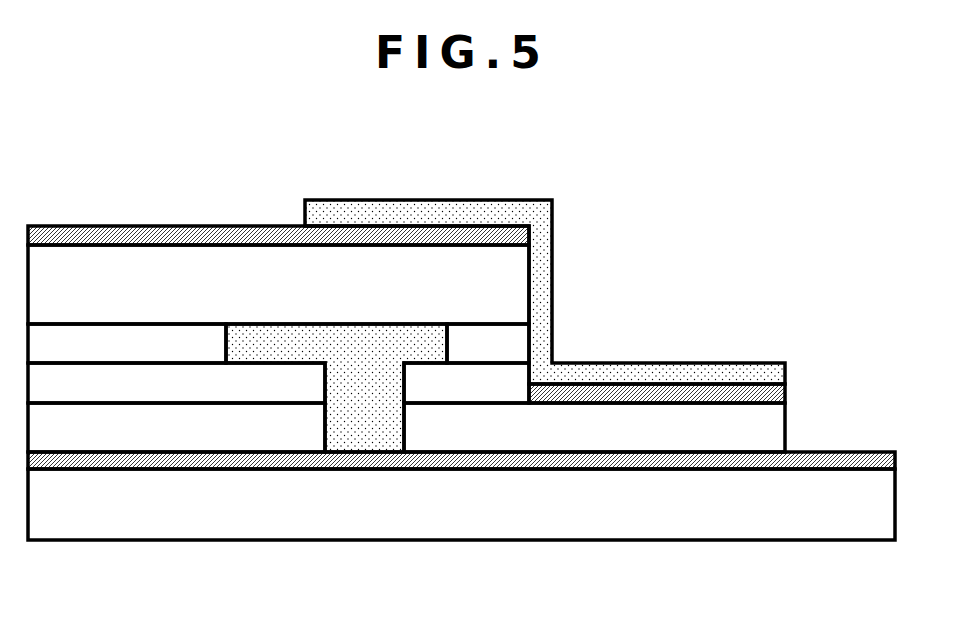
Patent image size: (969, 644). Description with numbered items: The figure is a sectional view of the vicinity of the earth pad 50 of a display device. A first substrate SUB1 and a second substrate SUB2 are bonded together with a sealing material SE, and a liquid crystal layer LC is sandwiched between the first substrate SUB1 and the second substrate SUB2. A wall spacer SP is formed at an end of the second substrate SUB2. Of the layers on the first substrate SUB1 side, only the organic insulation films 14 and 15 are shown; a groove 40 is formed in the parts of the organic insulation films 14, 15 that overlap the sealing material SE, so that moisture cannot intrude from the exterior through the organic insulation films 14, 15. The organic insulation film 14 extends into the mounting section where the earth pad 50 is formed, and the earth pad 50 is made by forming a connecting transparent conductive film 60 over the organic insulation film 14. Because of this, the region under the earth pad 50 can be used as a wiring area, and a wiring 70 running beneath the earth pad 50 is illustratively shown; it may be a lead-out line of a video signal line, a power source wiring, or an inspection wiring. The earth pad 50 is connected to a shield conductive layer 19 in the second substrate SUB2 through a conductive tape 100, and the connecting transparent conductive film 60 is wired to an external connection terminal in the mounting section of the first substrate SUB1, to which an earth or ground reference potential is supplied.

The first substrate SUB1 is at (857, 522).
The second substrate SUB2 is at (178, 266).
The wiring 70 is at (670, 455).
The organic insulation film 14 is at (688, 428).
The organic insulation film 15 is at (214, 393).
The liquid crystal layer LC is at (125, 350).
The groove 40 is at (363, 430).
The sealing material SE is at (418, 350).
The wall spacer SP is at (493, 350).
The shield conductive layer 19 is at (99, 238).
The conductive tape 100 is at (375, 208).
The earth pad 50 is at (600, 316).
The connecting transparent conductive film 60 is at (620, 396).